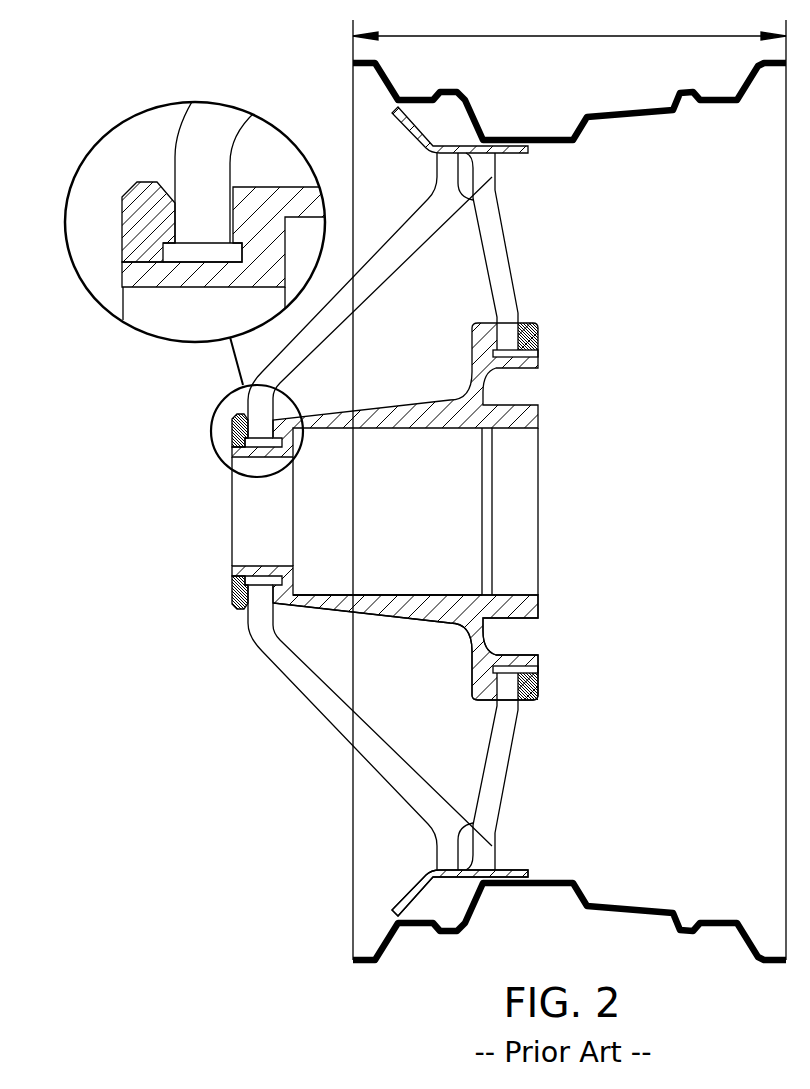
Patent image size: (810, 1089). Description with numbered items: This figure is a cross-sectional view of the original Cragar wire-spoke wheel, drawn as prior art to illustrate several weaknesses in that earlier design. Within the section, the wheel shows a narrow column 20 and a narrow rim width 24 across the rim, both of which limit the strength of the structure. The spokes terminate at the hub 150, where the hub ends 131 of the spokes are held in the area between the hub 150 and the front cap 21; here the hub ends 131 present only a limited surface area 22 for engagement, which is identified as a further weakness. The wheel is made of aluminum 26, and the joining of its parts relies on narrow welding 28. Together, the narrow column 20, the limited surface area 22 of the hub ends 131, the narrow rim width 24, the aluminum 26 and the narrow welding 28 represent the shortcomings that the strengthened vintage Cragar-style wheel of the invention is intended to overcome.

The narrow column 20 is at (252, 190).
The limited surface area 22 is at (150, 181).
The hub ends 131 is at (202, 233).
The front cap 21 is at (228, 592).
The hub 150 is at (327, 603).
The aluminum 26 is at (447, 623).
The narrow welding 28 is at (527, 880).
The narrow rim width 24 is at (569, 486).